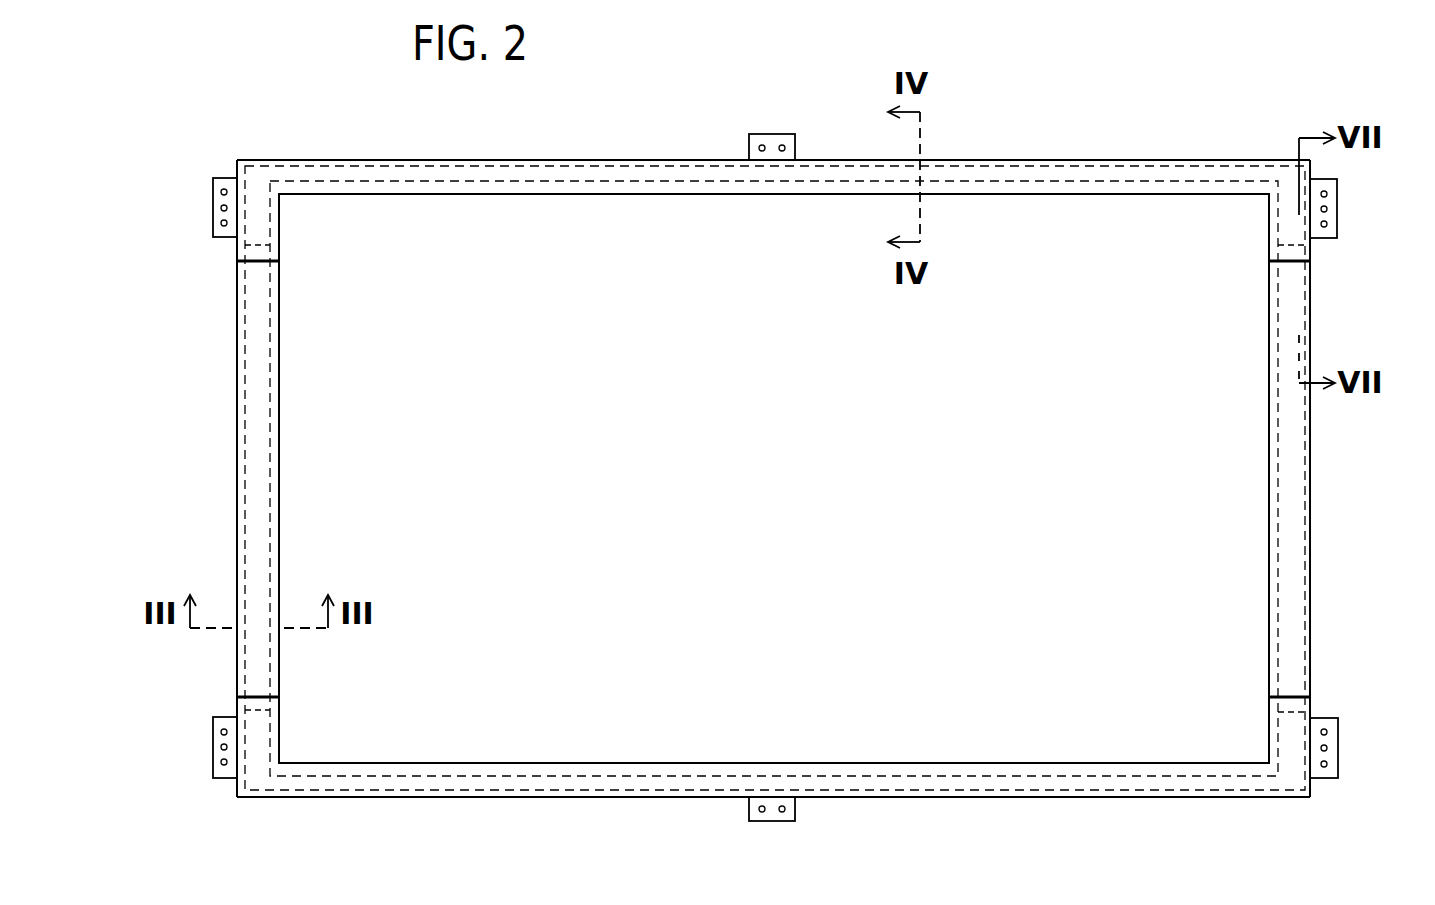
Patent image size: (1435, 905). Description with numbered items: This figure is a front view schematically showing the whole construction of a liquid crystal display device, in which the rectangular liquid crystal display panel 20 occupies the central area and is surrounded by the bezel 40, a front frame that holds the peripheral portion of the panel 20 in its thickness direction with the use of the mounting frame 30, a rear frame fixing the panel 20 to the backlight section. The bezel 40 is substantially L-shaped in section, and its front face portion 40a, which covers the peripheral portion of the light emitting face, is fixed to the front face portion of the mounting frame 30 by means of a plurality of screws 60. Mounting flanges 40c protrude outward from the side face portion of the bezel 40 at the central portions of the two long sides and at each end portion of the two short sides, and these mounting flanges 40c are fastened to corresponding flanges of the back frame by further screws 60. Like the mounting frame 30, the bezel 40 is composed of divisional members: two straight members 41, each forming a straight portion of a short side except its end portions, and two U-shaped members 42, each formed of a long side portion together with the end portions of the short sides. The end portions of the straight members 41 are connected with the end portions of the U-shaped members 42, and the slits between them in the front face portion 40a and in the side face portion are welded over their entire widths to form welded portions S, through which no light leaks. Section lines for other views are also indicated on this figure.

The liquid crystal display panel 20 is at (752, 496).
The mounting frame 30 is at (1131, 163).
The bezel 40 is at (1057, 159).
The front face portion 40a is at (973, 185).
The mounting flanges 40c is at (218, 178).
The straight members 41 is at (237, 465).
The U-shaped members 42 is at (734, 160).
The screws 60 is at (221, 191).
The welded portions S is at (258, 245).